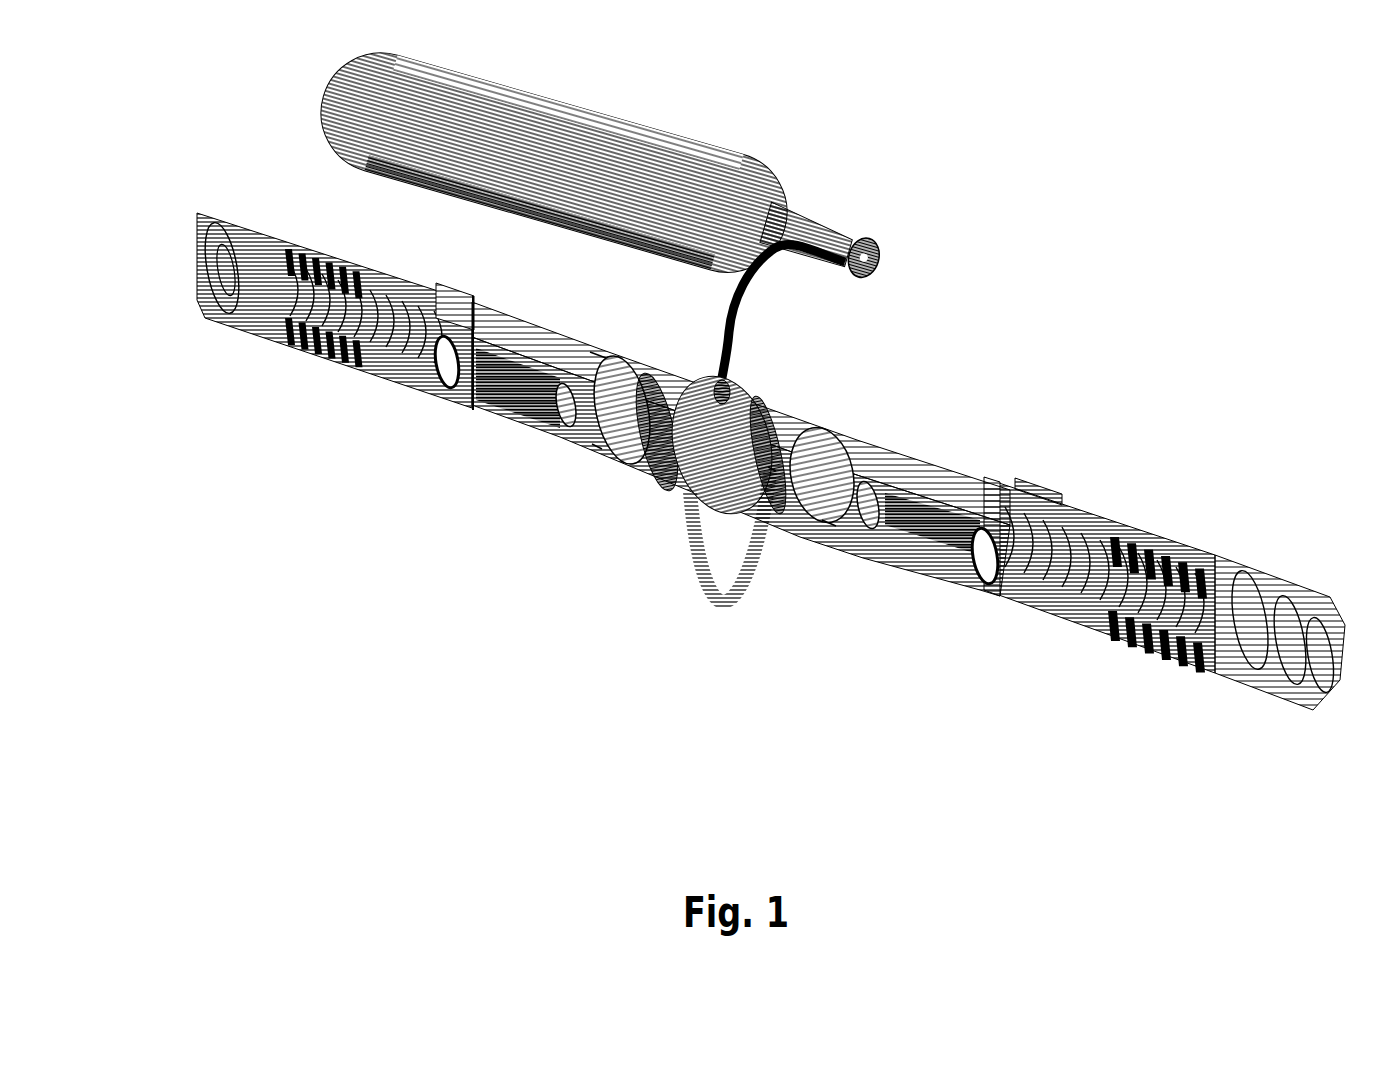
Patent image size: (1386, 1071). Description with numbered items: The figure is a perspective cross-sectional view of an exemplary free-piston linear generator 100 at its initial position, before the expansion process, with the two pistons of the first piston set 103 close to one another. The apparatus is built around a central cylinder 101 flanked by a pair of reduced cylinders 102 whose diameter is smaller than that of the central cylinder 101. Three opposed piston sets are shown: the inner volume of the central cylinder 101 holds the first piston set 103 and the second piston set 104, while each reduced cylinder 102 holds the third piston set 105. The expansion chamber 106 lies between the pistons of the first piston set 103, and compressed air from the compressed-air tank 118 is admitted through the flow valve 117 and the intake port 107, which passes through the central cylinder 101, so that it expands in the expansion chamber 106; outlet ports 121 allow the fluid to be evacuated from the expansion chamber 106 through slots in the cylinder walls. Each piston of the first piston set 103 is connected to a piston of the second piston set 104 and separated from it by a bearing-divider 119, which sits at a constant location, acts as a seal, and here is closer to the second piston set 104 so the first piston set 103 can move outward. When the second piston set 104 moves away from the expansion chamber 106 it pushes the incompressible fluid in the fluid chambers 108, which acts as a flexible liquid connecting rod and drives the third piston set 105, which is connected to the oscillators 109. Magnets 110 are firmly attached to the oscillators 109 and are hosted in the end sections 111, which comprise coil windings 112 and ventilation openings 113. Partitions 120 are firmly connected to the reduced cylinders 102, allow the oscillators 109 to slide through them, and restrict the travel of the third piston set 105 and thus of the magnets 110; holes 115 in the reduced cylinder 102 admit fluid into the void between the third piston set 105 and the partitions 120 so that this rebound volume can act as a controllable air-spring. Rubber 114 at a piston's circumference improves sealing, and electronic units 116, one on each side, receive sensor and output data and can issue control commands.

The free-piston linear generator 100 is at (1063, 175).
The central cylinder 101 is at (612, 350).
The reduced cylinders 102 is at (473, 400).
The first piston set 103 is at (737, 412).
The second piston set 104 is at (833, 443).
The third piston set 105 is at (562, 403).
The expansion chamber 106 is at (698, 482).
The intake port 107 is at (717, 393).
The fluid chambers 108 is at (600, 355).
The oscillators 109 is at (517, 382).
The magnets 110 is at (343, 335).
The end sections 111 is at (322, 240).
The coil windings 112 is at (305, 340).
The ventilation openings 113 is at (228, 310).
The rubber 114 is at (752, 422).
The holes 115 is at (468, 297).
The electronic units 116 is at (440, 292).
The flow valve 117 is at (722, 383).
The compressed-air tank 118 is at (680, 152).
The bearing-dividers 119 is at (598, 447).
The partitions 120 is at (433, 364).
The outlet ports 121 is at (717, 560).